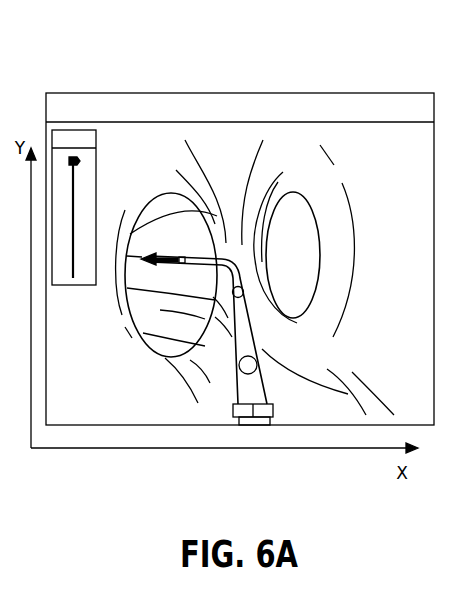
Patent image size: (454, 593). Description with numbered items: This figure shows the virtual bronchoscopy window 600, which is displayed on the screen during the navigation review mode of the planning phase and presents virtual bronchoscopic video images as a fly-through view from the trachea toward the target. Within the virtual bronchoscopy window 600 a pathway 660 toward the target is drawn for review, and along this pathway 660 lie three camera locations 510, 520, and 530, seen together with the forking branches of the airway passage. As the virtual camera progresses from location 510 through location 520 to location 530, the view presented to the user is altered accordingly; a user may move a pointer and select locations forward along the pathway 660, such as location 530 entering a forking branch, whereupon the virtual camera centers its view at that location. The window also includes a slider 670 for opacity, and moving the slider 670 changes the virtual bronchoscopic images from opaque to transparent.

The virtual bronchoscopy window 600 is at (302, 65).
The slider 670 is at (70, 302).
The location 530 is at (181, 252).
The location 520 is at (244, 291).
The pathway 660 is at (263, 340).
The location 510 is at (254, 372).